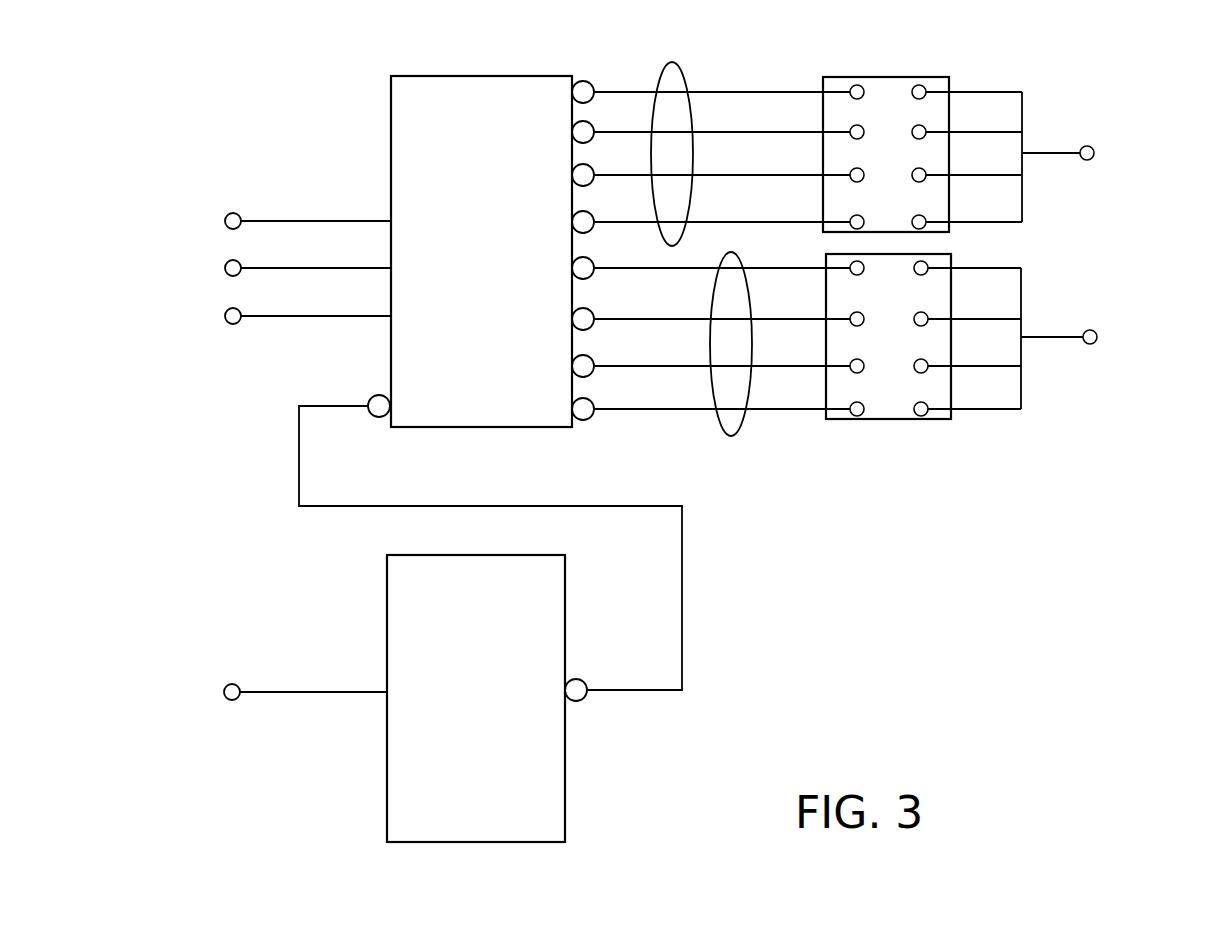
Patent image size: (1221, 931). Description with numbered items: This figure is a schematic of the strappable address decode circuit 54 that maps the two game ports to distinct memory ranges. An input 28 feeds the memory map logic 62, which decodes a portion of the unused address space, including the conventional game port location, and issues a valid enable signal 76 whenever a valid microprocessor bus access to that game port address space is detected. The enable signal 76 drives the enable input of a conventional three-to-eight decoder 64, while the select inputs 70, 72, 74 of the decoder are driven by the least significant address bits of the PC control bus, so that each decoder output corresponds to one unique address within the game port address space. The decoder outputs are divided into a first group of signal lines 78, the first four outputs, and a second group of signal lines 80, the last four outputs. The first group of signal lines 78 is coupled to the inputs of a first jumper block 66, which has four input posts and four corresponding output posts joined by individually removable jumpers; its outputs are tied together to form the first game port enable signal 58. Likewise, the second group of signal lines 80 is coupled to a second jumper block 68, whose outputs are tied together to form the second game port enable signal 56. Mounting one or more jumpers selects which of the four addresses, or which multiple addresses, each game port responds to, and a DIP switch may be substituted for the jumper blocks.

The memory map logic input 28 is at (224, 688).
The strappable address decode circuit 54 is at (908, 592).
The second game port enable signal 56 is at (1097, 333).
The first game port enable signal 58 is at (1094, 150).
The memory map logic 62 is at (565, 775).
The 3-to-8 decoder 64 is at (389, 130).
The first jumper block 66 is at (903, 76).
The second jumper block 68 is at (891, 419).
The select input 70 is at (226, 216).
The select input 72 is at (226, 263).
The select input 74 is at (226, 311).
The enable signal 76 is at (682, 590).
The first group of signal lines 78 is at (690, 110).
The second group of signal lines 80 is at (749, 397).